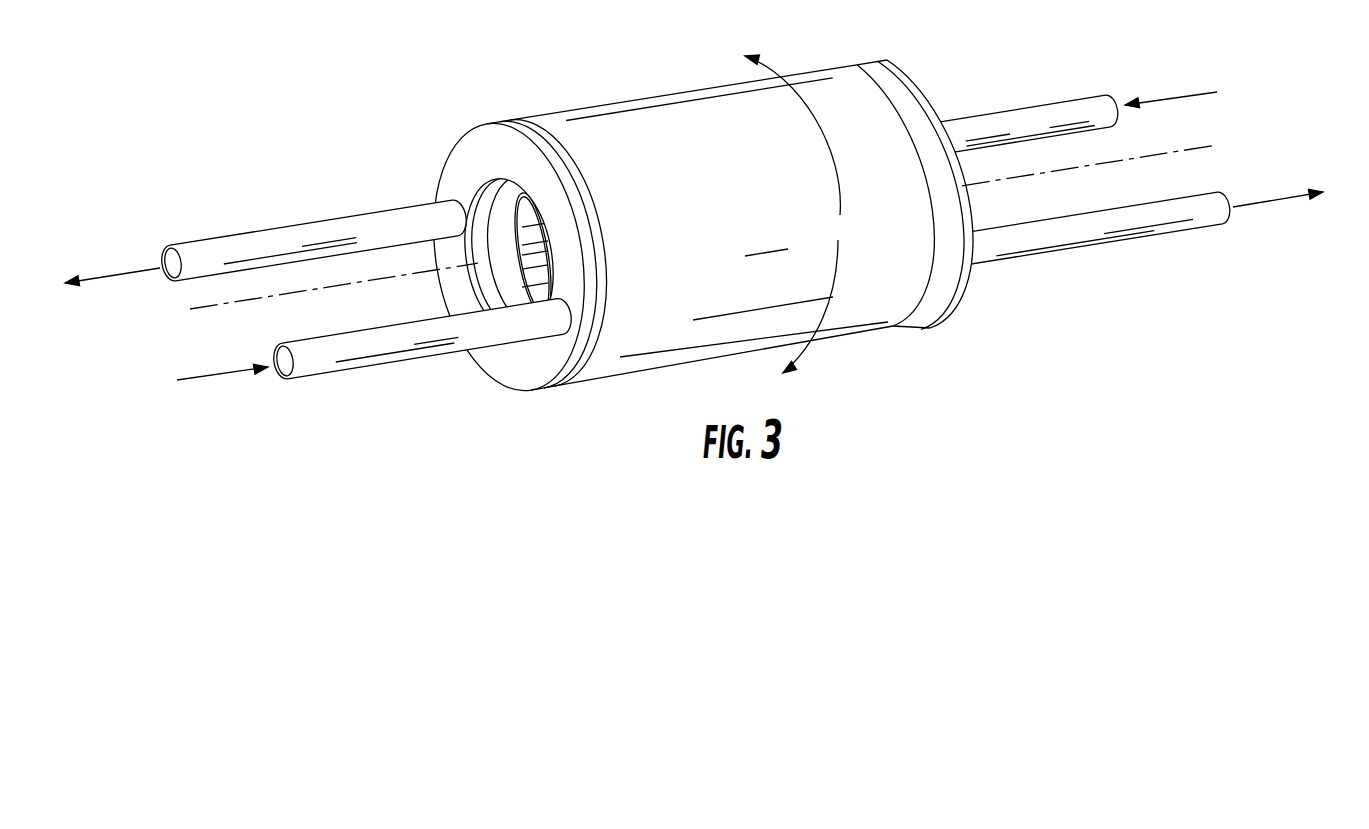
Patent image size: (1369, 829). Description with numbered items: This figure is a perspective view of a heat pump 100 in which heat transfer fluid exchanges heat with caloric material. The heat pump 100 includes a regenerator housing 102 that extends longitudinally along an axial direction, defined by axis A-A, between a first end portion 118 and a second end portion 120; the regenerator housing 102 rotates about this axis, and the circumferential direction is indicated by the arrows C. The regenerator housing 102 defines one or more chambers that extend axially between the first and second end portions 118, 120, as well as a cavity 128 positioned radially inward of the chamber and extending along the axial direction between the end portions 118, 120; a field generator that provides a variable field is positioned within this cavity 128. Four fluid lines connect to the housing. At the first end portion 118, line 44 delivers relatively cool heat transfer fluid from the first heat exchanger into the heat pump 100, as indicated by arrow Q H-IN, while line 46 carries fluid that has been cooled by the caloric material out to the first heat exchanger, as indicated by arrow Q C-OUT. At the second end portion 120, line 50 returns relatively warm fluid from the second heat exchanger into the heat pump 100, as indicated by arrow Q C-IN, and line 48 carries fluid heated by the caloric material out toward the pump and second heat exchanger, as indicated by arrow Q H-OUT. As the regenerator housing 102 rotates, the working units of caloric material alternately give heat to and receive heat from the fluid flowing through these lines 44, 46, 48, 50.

The heat pump 100 is at (380, 147).
The regenerator housing 102 is at (852, 108).
The first end portion 118 is at (507, 117).
The second end portion 120 is at (893, 343).
The cavity 128 is at (513, 276).
The line 44 is at (317, 360).
The line 46 is at (302, 230).
The line 48 is at (1162, 222).
The line 50 is at (1025, 117).